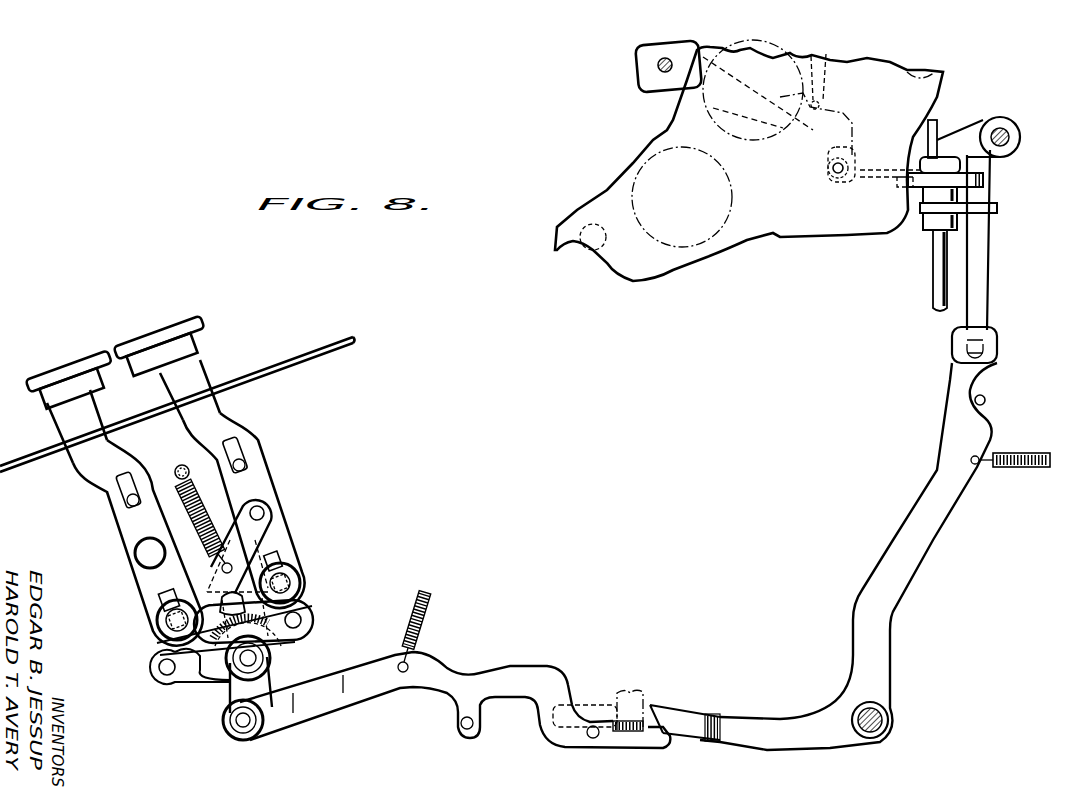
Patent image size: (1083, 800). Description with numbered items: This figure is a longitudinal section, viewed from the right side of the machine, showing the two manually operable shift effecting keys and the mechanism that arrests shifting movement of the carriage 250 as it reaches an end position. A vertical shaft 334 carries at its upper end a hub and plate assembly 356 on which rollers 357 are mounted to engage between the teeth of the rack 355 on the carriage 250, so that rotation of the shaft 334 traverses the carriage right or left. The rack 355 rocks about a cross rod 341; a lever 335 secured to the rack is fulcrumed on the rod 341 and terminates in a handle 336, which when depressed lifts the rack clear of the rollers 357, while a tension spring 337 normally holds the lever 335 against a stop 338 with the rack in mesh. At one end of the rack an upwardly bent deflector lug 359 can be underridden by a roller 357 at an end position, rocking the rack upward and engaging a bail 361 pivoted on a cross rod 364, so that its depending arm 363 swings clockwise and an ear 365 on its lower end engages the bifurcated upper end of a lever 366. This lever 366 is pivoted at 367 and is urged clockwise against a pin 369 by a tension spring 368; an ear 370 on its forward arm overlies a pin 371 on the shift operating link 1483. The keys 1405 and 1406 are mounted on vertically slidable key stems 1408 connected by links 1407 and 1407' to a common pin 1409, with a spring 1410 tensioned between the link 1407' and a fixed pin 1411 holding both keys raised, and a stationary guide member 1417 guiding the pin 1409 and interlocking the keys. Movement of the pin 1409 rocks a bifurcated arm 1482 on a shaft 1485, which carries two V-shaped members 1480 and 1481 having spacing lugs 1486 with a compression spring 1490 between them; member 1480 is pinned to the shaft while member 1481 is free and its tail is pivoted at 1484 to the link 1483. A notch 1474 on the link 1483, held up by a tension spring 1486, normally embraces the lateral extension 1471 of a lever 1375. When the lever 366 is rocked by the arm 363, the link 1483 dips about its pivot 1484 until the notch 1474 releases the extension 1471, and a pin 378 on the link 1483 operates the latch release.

The shiftable carriage 250 is at (673, 117).
The vertical shaft 334 is at (937, 253).
The lever 335 is at (820, 120).
The handle 336 is at (647, 77).
The tension spring 337 is at (823, 82).
The stop 338 is at (762, 66).
The cross rod 341 is at (837, 174).
The rack 355 is at (963, 175).
The hub and plate assembly 356 is at (980, 186).
The rollers 357 is at (960, 165).
The deflector lug 359 is at (943, 150).
The bail 361 is at (935, 122).
The depending arm 363 is at (983, 297).
The cross rod 364 is at (1013, 137).
The ear 365 is at (993, 350).
The lever 366 is at (990, 423).
The pivot 367 is at (880, 725).
The tension spring 368 is at (1023, 453).
The pin 369 is at (985, 398).
The ear 370 is at (573, 713).
The pin 371 is at (593, 738).
The pin 378 is at (467, 729).
The lever 1375 is at (643, 690).
The shift-effecting key 1405 is at (47, 377).
The shift-effecting key 1406 is at (172, 303).
The link 1407 is at (142, 606).
The link 1407' is at (271, 546).
The key stem 1408 is at (125, 503).
The common pin 1409 is at (273, 560).
The spring 1410 is at (190, 500).
The pin 1411 is at (187, 464).
The stationary guide member 1417 is at (187, 680).
The lateral extension 1471 is at (650, 717).
The notch 1474 is at (623, 733).
The V-shaped member 1480 is at (160, 641).
The V-shaped member 1481 is at (237, 695).
The bifurcated arm 1482 is at (300, 587).
The link 1483 is at (400, 680).
The pivot 1484 is at (237, 735).
The shaft 1485 is at (270, 660).
The spacing lugs 1486 is at (428, 622).
The compression spring 1490 is at (306, 602).